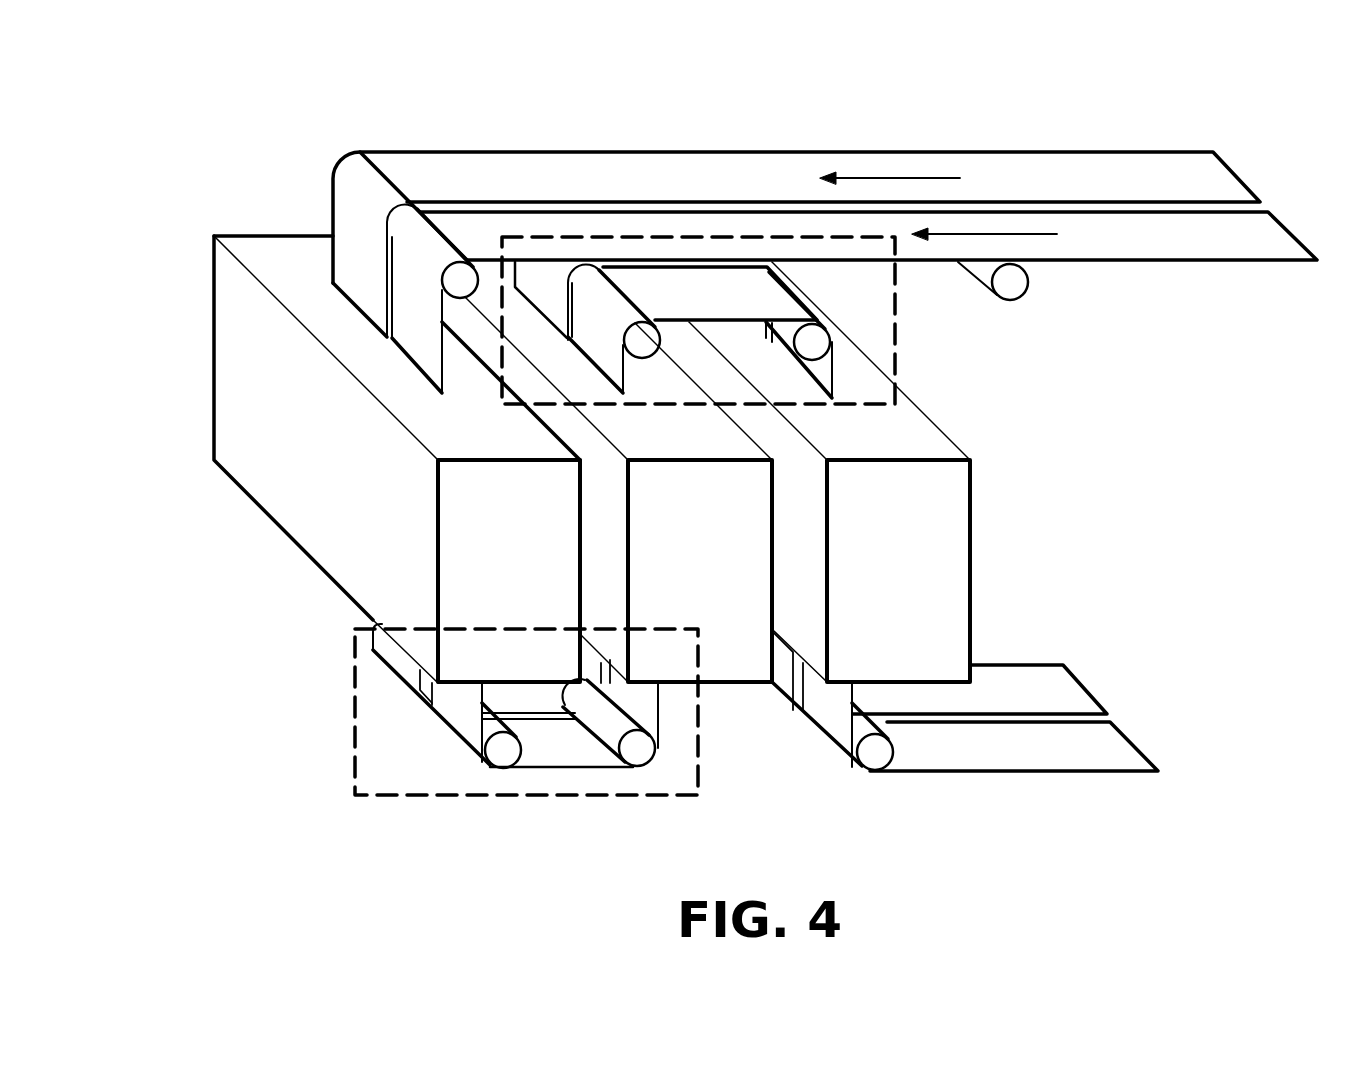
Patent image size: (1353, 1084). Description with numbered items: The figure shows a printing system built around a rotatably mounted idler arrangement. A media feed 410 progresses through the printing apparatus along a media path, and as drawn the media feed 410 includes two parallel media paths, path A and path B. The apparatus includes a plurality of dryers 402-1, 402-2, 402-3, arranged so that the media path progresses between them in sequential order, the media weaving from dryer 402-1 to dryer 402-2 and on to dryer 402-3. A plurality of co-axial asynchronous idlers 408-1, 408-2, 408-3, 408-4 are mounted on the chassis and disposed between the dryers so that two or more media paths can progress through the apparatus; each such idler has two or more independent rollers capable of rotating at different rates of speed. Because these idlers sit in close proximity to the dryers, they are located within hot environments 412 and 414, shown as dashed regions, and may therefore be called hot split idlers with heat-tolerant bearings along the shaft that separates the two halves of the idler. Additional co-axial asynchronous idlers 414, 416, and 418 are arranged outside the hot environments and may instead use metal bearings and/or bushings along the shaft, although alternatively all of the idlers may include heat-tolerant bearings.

The dryer 402-1 is at (397, 459).
The dryer 402-2 is at (619, 490).
The dryer 402-3 is at (829, 472).
The co-axial asynchronous idler 408-1 is at (895, 317).
The co-axial asynchronous idler 408-2 is at (642, 340).
The co-axial asynchronous idler 408-3 is at (503, 750).
The co-axial asynchronous idler 408-4 is at (637, 750).
The media feed 410 is at (1155, 218).
The hot environment 412 is at (812, 342).
The hot environment 414 is at (1010, 283).
The co-axial asynchronous idler 416 is at (460, 279).
The co-axial asynchronous idler 418 is at (875, 752).